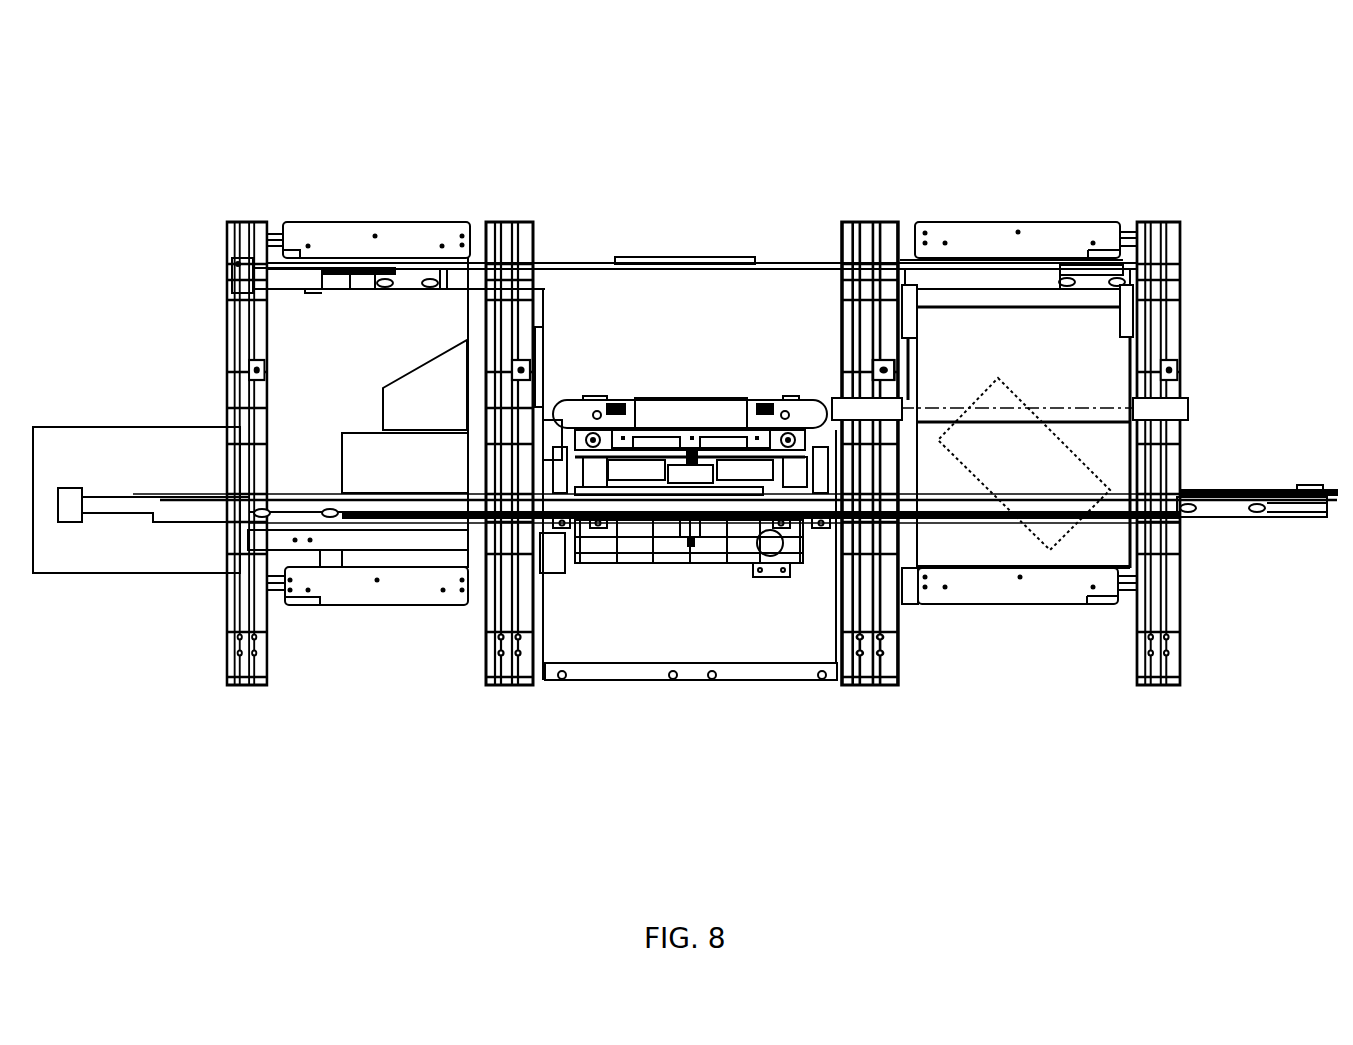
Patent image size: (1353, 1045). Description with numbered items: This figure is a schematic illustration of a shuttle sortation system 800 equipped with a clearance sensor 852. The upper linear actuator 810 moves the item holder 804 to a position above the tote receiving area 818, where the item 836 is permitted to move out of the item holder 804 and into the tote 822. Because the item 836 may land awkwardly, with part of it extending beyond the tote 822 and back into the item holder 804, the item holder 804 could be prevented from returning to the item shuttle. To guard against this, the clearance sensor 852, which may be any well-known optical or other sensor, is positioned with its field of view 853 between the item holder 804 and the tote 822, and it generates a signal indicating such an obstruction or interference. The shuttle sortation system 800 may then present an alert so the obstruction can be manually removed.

The shuttle sortation system 800 is at (628, 100).
The upper linear actuator 810 is at (788, 265).
The item holder 804 is at (1003, 335).
The field of view 853 is at (1097, 407).
The clearance sensor 852 is at (1210, 400).
The item 836 is at (1068, 468).
The tote 822 is at (965, 545).
The tote receiving area 818 is at (1010, 660).